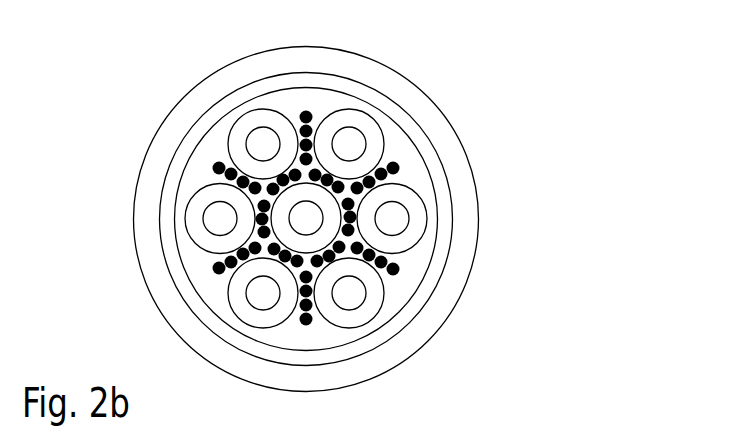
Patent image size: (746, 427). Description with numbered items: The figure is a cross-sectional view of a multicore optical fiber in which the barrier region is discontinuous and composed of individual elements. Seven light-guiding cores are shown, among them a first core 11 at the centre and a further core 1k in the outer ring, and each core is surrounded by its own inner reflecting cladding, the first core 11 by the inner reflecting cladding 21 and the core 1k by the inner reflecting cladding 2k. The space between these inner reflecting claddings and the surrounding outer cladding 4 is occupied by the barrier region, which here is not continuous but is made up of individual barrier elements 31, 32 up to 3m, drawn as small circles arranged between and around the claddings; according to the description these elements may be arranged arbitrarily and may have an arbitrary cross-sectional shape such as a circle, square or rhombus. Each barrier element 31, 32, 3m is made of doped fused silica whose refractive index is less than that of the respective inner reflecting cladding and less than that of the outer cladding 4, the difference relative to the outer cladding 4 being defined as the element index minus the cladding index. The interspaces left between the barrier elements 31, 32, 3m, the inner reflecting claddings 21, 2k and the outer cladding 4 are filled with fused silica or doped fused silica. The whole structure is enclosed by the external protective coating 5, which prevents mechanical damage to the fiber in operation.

The light-guiding core 1k is at (265, 133).
The inner reflecting cladding 2k is at (288, 137).
The light-guiding core 11 is at (310, 210).
The inner reflecting cladding 21 is at (331, 222).
The barrier element 3m is at (340, 257).
The barrier element 32 is at (388, 278).
The barrier element 31 is at (397, 280).
The outer cladding 4 is at (272, 352).
The external protective coating 5 is at (174, 306).